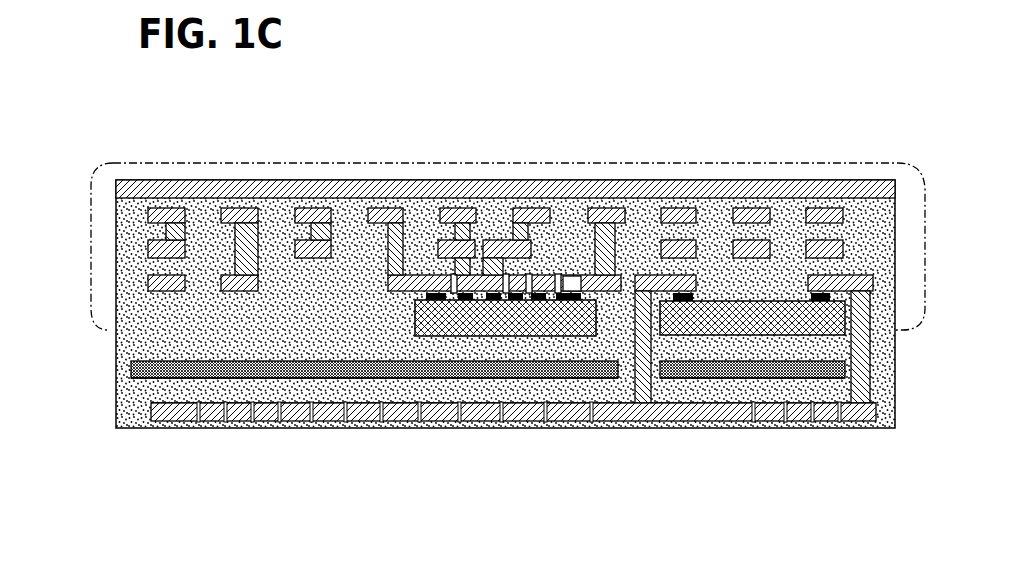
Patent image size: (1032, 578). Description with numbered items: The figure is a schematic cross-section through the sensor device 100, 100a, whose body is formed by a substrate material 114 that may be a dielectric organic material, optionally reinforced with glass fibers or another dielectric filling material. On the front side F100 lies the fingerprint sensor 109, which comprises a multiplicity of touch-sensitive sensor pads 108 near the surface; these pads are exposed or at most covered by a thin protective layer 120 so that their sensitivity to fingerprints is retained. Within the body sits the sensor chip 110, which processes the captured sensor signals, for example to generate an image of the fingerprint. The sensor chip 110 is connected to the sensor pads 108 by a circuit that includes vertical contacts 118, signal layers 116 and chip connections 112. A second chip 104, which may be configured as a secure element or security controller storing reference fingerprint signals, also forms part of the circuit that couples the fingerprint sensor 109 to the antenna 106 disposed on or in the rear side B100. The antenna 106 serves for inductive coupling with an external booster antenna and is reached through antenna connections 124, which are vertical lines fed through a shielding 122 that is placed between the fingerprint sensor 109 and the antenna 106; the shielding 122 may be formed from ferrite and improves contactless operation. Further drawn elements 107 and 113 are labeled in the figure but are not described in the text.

The sensor device 100 is at (475, 290).
The semiconductor package 100a is at (475, 290).
The second chip 104 is at (773, 310).
The antenna 106 is at (142, 412).
The lower dielectric layer 107 is at (400, 398).
The sensor pads 108 is at (560, 172).
The fingerprint sensor 109 is at (632, 156).
The sensor chip 110 is at (507, 307).
The chip connections 112 is at (433, 297).
The conductive bump 113 is at (672, 294).
The substrate material 114 is at (162, 308).
The signal layers 116 is at (143, 281).
The vertical contacts 118 is at (160, 220).
The protective layer 120 is at (150, 202).
The shielding 122 is at (247, 373).
The antenna connections 124 is at (625, 372).
The front side F100 is at (298, 152).
The rear side B100 is at (790, 437).